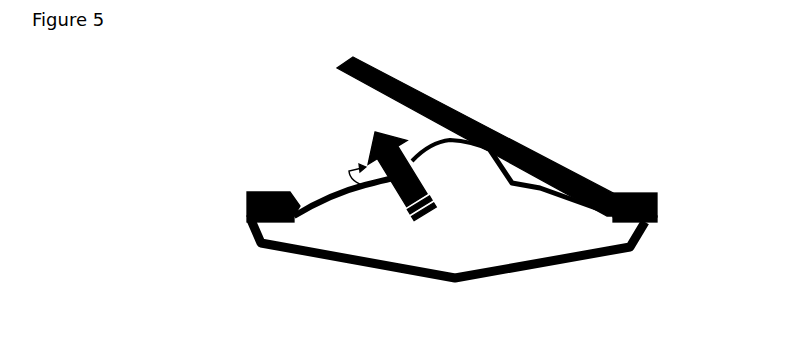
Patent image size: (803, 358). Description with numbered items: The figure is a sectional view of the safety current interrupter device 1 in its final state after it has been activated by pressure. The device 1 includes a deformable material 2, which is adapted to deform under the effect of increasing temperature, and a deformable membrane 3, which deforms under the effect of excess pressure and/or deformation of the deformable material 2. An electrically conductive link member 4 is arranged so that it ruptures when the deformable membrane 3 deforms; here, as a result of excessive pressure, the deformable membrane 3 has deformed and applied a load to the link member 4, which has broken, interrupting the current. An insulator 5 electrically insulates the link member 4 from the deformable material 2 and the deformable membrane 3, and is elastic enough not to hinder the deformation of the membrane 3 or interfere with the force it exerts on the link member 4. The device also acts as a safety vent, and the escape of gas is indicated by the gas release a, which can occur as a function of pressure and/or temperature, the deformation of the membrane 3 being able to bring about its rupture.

The safety current interrupter device 1 is at (461, 137).
The deformable material 2 is at (342, 263).
The deformable membrane 3 is at (620, 223).
The electrically conductive link member 4 is at (489, 126).
The insulator 5 is at (327, 197).
The gas release a is at (345, 158).